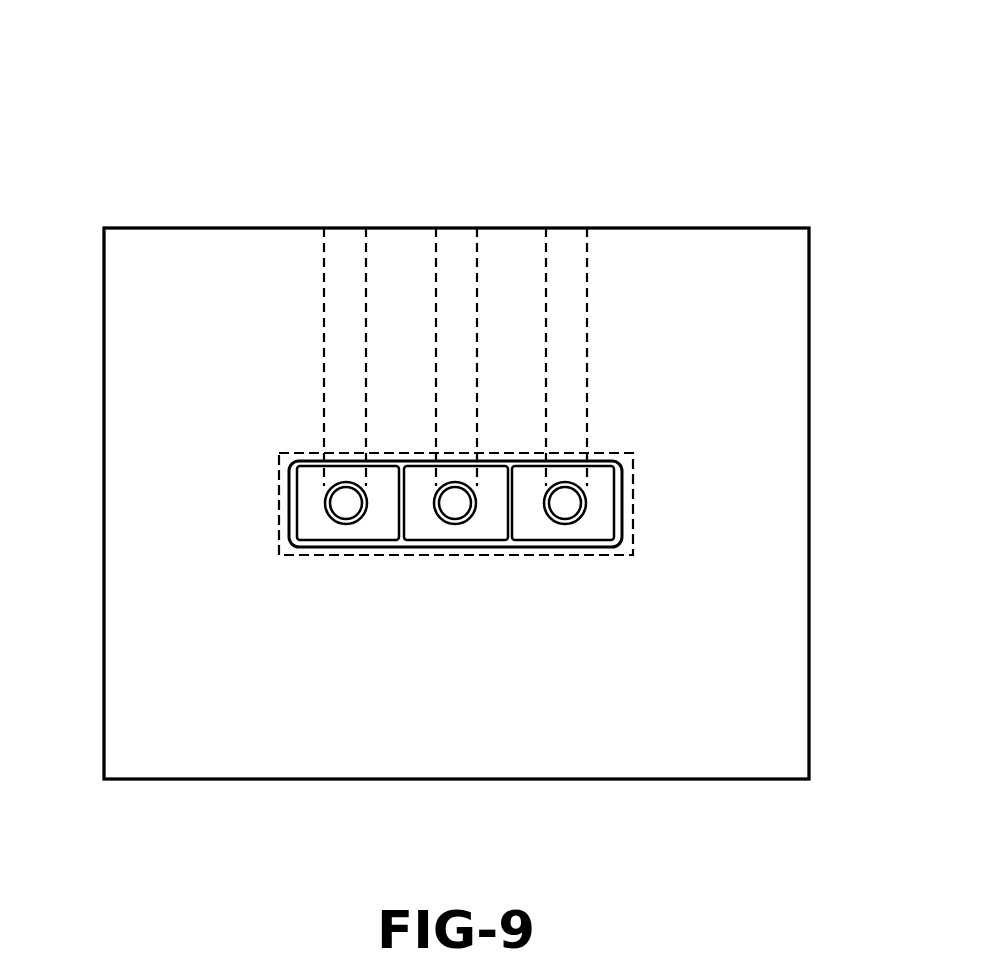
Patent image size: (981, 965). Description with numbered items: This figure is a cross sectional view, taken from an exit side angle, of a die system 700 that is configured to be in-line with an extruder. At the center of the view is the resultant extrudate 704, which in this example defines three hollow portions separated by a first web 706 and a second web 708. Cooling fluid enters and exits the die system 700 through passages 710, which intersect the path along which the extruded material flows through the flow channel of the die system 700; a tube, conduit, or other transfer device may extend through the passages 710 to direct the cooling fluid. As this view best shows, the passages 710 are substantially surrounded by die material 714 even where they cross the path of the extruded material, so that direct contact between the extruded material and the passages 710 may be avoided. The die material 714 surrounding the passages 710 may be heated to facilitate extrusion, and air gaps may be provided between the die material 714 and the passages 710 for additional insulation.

The die system 700 is at (175, 127).
The extrudate 704 is at (333, 547).
The web 706 is at (397, 507).
The web 708 is at (513, 507).
The passages 710 is at (350, 258).
The die material 714 is at (707, 258).